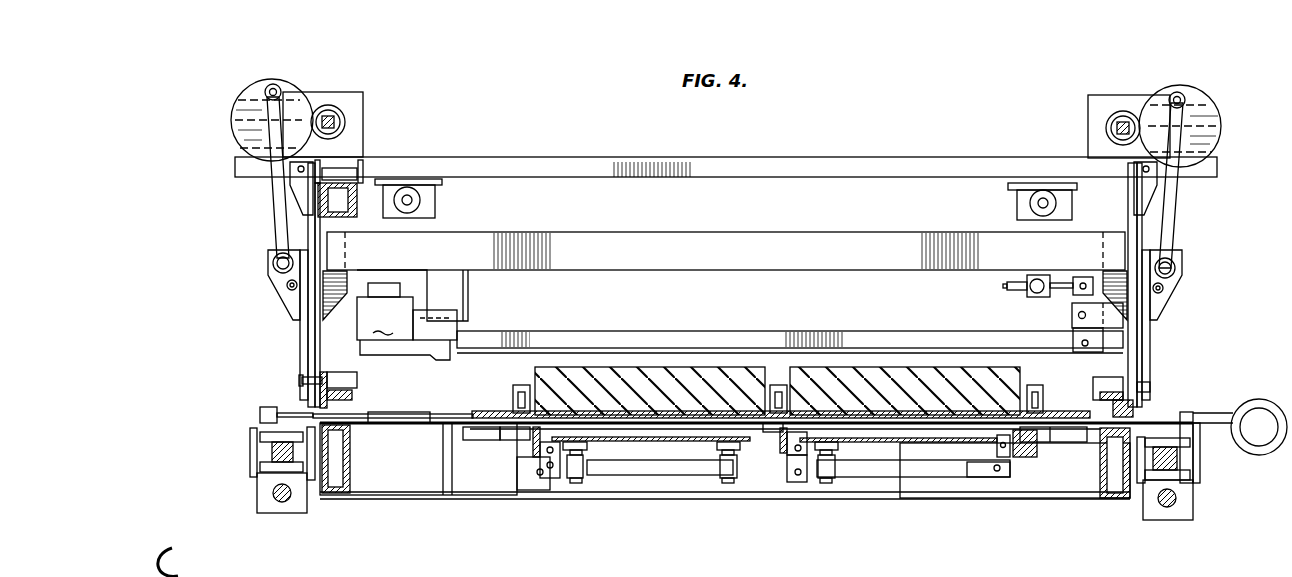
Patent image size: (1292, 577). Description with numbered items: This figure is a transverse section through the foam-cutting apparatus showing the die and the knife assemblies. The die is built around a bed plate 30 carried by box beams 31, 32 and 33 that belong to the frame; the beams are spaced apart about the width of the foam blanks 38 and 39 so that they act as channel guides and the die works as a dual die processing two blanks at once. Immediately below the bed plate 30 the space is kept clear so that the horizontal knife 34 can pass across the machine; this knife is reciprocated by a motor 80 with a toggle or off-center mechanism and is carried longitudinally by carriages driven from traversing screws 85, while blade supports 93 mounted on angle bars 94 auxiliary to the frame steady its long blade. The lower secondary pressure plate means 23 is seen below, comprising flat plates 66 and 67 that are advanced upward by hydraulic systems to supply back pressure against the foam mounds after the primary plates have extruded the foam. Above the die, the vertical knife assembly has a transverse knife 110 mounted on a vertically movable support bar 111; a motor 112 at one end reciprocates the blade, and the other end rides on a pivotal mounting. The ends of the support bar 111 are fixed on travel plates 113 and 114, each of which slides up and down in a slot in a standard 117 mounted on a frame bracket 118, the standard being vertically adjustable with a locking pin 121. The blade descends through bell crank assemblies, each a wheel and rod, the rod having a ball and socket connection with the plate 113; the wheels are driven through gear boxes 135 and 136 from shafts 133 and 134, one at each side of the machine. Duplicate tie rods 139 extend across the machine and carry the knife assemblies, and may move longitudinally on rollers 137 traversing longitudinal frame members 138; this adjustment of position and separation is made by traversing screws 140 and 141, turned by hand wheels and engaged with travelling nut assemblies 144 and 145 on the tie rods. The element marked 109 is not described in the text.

The lower secondary pressure plate means 23 is at (850, 500).
The bed plate 30 is at (1057, 412).
The box beam 31 is at (512, 393).
The box beam 32 is at (775, 385).
The box beam 33 is at (1036, 386).
The knife 34 is at (442, 413).
The foam blank 38 is at (625, 368).
The foam blank 39 is at (845, 368).
The flat plate 66 is at (630, 438).
The flat plate 67 is at (932, 458).
The motor 80 is at (1254, 400).
The traversing screw 85 is at (1167, 507).
The blade support 93 is at (773, 433).
The angle bar 94 is at (782, 455).
The valve assembly 109 is at (1050, 322).
The knife 110 is at (535, 332).
The support bar 111 is at (728, 246).
The motor 112 is at (407, 321).
The travel plate 113 is at (288, 296).
The travel plate 114 is at (1163, 305).
The standard 117 is at (300, 345).
The frame bracket 118 is at (340, 401).
The locking pin 121 is at (299, 380).
The shaft 133 is at (1108, 128).
The shaft 134 is at (336, 122).
The gear box 135 is at (1097, 107).
The gear box 136 is at (342, 92).
The roller 137 is at (337, 172).
The longitudinal frame member 138 is at (350, 237).
The tie rod 139 is at (720, 162).
The traversing screw 140 is at (421, 200).
The traversing screw 141 is at (1030, 204).
The travelling nut assembly 144 is at (437, 212).
The travelling nut assembly 145 is at (1013, 200).